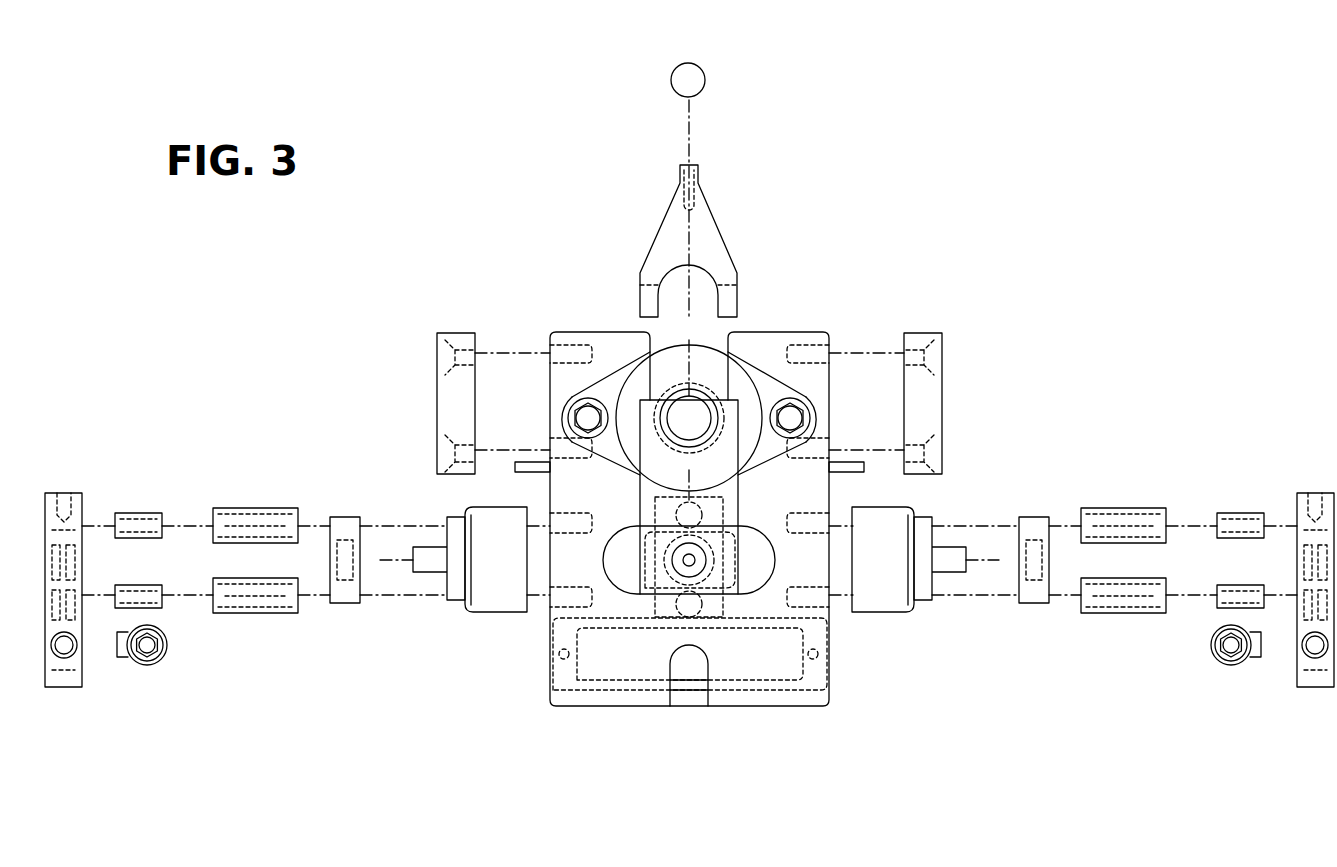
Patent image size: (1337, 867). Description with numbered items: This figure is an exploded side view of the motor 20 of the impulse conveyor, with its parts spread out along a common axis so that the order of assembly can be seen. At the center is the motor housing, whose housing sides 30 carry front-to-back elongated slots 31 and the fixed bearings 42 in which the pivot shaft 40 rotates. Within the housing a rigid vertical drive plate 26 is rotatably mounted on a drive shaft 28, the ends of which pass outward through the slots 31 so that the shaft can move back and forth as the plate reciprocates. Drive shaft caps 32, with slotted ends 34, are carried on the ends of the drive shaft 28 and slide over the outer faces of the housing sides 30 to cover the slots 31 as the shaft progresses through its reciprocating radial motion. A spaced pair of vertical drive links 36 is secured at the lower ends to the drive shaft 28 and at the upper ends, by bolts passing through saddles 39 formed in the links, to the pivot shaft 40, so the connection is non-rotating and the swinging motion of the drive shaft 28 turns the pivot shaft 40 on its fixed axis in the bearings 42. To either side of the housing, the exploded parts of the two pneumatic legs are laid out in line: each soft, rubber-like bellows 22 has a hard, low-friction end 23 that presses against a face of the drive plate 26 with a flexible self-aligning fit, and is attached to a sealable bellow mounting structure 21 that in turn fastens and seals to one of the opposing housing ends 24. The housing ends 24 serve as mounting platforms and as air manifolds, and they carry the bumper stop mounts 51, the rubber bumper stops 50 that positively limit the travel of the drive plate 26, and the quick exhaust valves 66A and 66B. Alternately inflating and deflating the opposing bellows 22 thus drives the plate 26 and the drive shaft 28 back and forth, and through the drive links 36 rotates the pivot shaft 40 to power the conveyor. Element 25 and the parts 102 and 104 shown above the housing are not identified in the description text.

The motor 20 is at (563, 288).
The bellow mounting structure 21 is at (345, 530).
The bellows 22 is at (495, 602).
The low-friction end 23 is at (528, 584).
The housing end 24 is at (68, 690).
The side bar 25 is at (450, 422).
The drive plate 26 is at (647, 608).
The drive shaft 28 is at (703, 568).
The motor housing side 30 is at (572, 706).
The slot 31 is at (672, 605).
The drive shaft cap 32 is at (745, 580).
The slotted end 34 is at (748, 535).
The drive link 36 is at (732, 503).
The saddle 39 is at (910, 757).
The pivot shaft 40 is at (700, 398).
The bearing 42 is at (755, 375).
The bumper stop 50 is at (245, 522).
The bumper stop mount 51 is at (143, 515).
The quick exhaust valve 66A is at (1236, 664).
The quick exhaust valve 66B is at (152, 664).
The ball 102 is at (706, 84).
The fork 104 is at (710, 258).